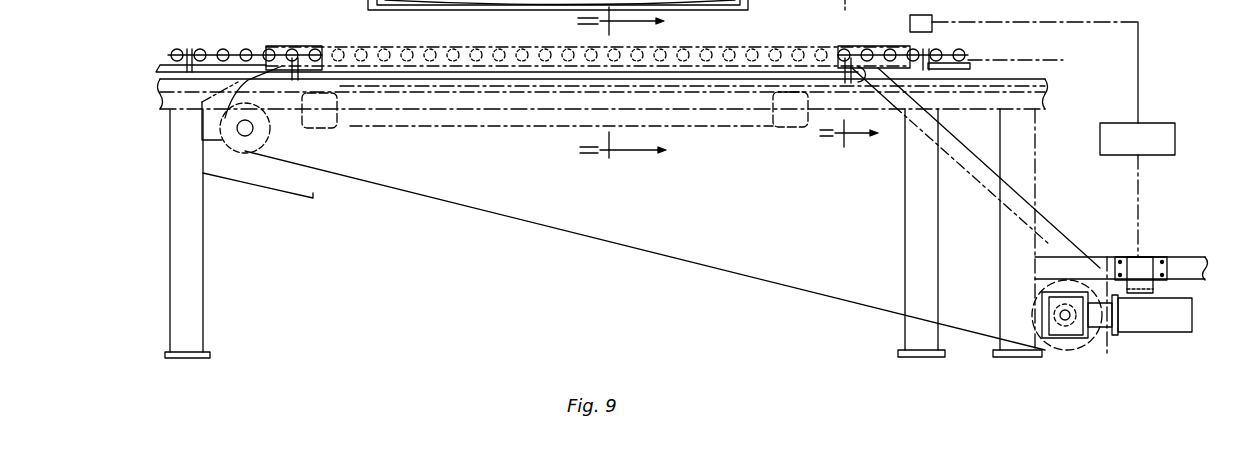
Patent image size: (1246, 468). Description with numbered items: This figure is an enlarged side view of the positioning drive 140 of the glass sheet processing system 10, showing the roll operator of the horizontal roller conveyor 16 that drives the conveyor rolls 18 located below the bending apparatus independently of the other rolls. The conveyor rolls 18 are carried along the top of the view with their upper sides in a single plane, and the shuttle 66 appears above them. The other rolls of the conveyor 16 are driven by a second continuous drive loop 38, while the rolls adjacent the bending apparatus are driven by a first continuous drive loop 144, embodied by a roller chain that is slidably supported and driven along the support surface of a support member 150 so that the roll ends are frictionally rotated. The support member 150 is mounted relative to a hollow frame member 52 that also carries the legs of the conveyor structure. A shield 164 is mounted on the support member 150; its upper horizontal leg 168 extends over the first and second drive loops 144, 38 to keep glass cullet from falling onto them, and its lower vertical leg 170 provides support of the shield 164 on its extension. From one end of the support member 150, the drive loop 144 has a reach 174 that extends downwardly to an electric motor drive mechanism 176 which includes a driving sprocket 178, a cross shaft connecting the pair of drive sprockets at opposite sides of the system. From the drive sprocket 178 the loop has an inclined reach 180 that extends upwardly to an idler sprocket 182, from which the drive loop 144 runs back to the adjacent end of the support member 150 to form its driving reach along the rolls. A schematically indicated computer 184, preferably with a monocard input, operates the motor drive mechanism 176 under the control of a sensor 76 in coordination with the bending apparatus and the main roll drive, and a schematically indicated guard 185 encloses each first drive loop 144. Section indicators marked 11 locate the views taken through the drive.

The system 10 is at (863, 133).
The section line for FIG. 11 is at (640, 83).
The horizontal roller conveyor 16 is at (956, 43).
The conveyor rolls 18 is at (222, 49).
The second continuous drive loop 38 is at (1027, 60).
The hollow frame member 52 is at (762, 111).
The shuttle 66 is at (368, 4).
The sensor 76 is at (910, 22).
The positioning drive 140 is at (735, 287).
The first continuous drive loop 144 is at (617, 246).
The support member 150 is at (438, 83).
The shield 164 is at (772, 45).
The upper horizontal leg 168 is at (720, 45).
The lower vertical leg 170 is at (737, 66).
The reach 174 is at (1006, 204).
The electric motor drive mechanism 176 is at (1134, 336).
The driving sprocket 178 is at (1045, 279).
The reach 180 is at (502, 214).
The idler sprocket 182 is at (255, 146).
The computer 184 is at (1212, 94).
The guard 185 is at (253, 185).